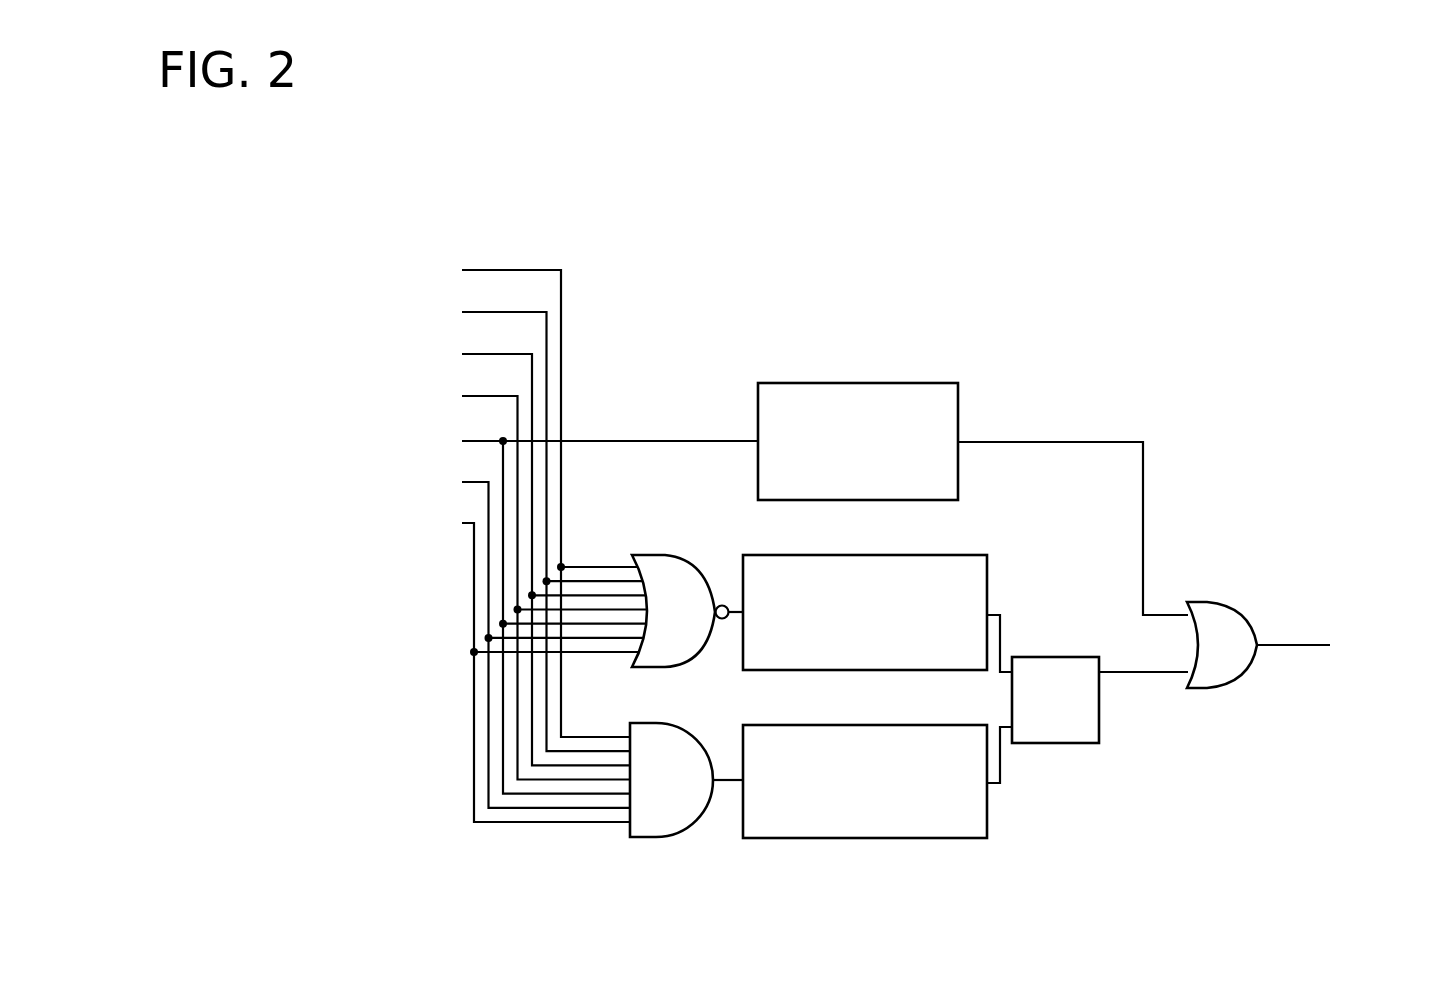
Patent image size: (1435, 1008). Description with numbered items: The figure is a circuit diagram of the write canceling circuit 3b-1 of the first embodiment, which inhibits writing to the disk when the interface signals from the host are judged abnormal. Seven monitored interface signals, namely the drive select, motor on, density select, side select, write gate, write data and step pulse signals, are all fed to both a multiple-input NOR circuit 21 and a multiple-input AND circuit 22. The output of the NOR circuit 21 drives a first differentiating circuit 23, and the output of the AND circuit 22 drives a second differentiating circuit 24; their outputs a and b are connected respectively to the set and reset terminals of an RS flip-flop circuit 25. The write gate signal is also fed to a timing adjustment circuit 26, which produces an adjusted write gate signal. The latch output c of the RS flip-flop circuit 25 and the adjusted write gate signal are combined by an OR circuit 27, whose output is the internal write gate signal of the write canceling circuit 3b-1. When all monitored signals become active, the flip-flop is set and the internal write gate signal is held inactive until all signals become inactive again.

The NOR circuit 21 is at (649, 555).
The AND circuit 22 is at (655, 723).
The first differentiating circuit 23 is at (860, 555).
The second differentiating circuit 24 is at (860, 725).
The RS flip-flop circuit 25 is at (1062, 657).
The timing adjustment circuit 26 is at (861, 383).
The OR circuit 27 is at (1203, 602).
The write canceling circuit 3b-1 is at (1138, 319).